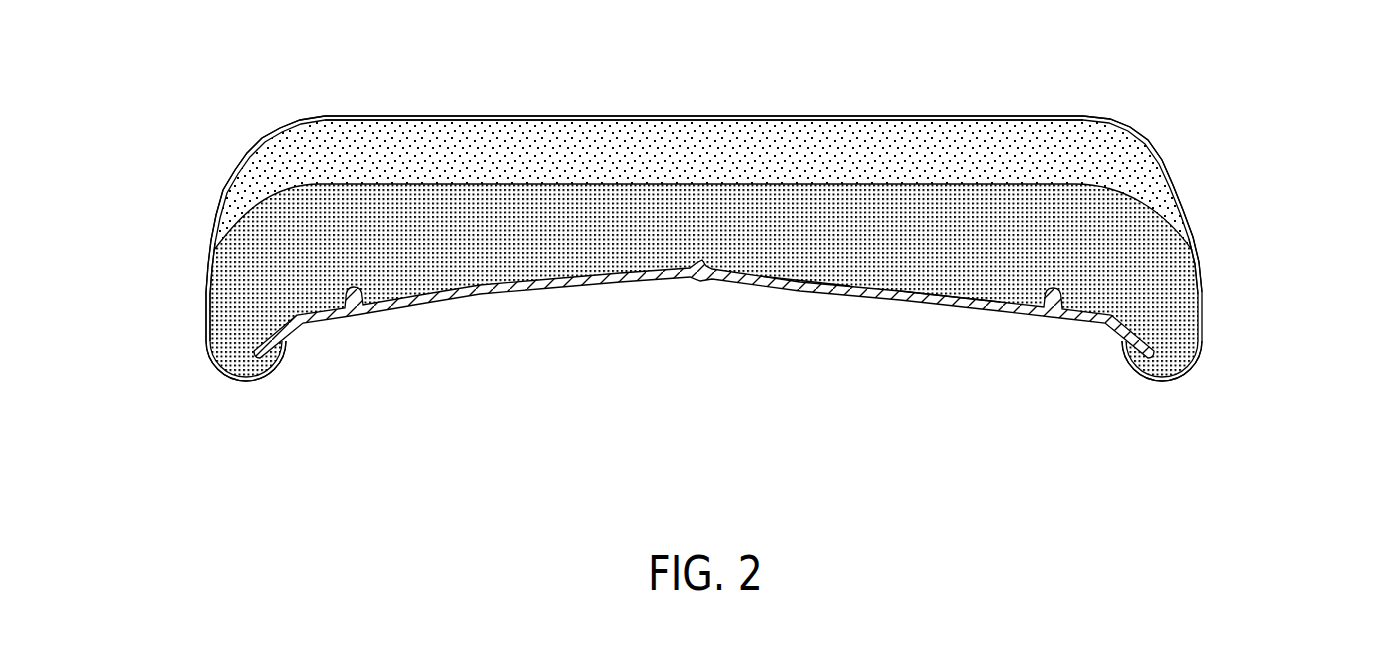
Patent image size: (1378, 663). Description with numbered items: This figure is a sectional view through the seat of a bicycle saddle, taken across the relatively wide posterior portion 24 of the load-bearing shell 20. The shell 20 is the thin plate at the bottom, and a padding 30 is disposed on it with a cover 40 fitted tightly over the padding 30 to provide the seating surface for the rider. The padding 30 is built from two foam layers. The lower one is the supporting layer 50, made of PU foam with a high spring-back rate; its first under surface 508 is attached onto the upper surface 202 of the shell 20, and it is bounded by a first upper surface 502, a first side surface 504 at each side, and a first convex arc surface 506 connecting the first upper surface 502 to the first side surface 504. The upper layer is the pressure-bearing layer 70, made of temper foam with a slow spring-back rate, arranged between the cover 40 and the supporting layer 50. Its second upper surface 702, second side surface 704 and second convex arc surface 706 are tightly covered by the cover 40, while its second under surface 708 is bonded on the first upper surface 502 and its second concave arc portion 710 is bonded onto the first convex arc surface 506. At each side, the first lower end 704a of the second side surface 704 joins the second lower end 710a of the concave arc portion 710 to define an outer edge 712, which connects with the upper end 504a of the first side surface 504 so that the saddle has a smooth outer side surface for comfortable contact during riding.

The load-bearing shell 20 is at (548, 310).
The posterior portion 24 is at (803, 286).
The padding 30 is at (463, 400).
The cover 40 is at (898, 100).
The supporting layer 50 is at (429, 260).
The pressure-bearing layer 70 is at (375, 170).
The upper surface of the shell 202 is at (960, 345).
The first under surface 508 is at (943, 291).
The first upper surface 502 is at (697, 115).
The second under surface 708 is at (597, 184).
The first side surface 504 is at (208, 335).
The upper end of the first side surface 504a is at (714, 270).
The first convex arc surface 506 is at (770, 154).
The second concave arc portion 710 is at (293, 185).
The second upper surface 702 is at (1013, 118).
The second side surface 704 is at (209, 204).
The first lower end 704a is at (714, 270).
The second convex arc surface 706 is at (253, 143).
The second lower end 710a is at (210, 250).
The outer edge 712 is at (714, 270).